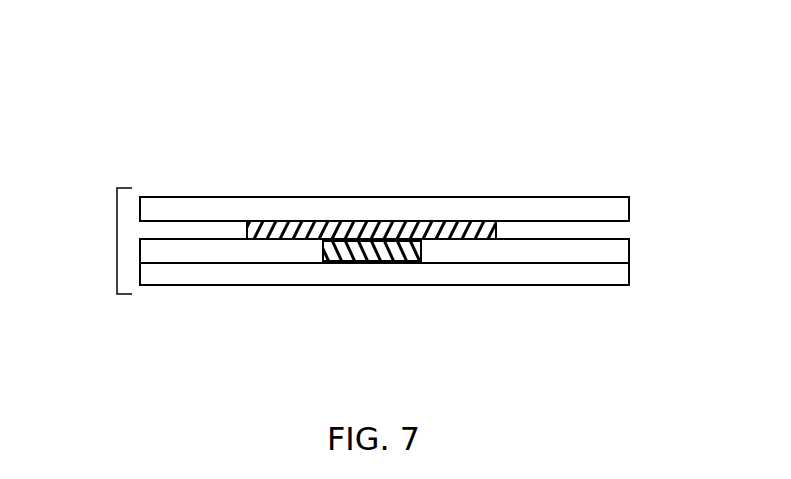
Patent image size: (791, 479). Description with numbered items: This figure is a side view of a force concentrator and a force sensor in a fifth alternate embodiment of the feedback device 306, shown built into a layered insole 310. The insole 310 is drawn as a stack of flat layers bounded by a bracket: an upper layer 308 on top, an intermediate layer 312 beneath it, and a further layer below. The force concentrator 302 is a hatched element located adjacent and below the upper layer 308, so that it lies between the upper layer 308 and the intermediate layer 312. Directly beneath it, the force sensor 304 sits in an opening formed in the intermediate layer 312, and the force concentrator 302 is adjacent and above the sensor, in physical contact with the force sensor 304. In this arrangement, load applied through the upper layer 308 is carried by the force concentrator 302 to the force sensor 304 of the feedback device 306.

The force concentrator 302 is at (453, 228).
The force sensor 304 is at (400, 255).
The feedback device 306 is at (663, 100).
The upper layer 308 is at (637, 209).
The insole 310 is at (108, 236).
The intermediate layer 312 is at (637, 252).